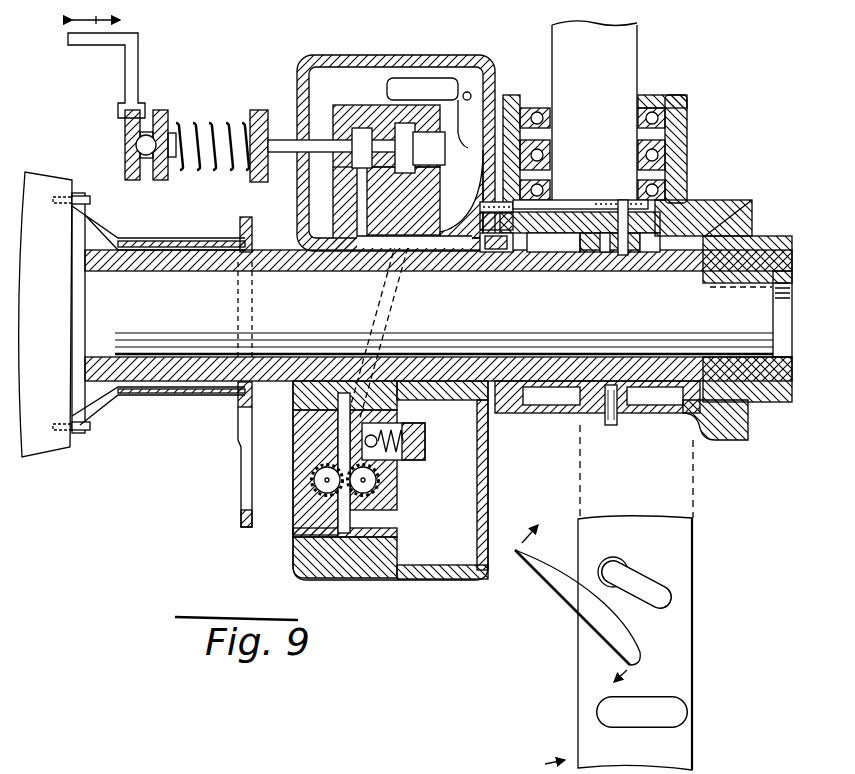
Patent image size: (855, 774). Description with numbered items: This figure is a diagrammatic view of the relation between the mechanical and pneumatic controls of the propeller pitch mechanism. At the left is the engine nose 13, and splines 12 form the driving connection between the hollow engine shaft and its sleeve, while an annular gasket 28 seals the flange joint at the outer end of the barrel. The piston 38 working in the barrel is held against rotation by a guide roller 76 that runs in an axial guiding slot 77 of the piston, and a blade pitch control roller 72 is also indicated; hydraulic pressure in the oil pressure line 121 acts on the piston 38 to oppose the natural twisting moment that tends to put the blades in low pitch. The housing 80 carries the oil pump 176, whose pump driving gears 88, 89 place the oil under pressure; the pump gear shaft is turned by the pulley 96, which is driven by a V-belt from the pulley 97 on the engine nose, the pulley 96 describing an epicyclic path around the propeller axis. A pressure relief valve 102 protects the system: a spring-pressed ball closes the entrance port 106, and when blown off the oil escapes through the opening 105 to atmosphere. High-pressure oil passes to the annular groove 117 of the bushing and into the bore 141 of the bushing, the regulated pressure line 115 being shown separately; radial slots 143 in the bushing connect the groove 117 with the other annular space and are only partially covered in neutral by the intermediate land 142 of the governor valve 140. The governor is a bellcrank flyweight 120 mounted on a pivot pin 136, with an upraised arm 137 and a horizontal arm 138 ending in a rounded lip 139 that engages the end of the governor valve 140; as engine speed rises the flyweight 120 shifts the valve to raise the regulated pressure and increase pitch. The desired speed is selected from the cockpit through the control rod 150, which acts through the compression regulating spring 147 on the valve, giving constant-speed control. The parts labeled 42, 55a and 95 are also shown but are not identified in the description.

The splines 12 is at (214, 278).
The engine nose 13 is at (74, 323).
The annular gasket 28 is at (755, 205).
The piston 38 is at (556, 276).
The bearing bracket 42 is at (688, 133).
The cylinder 55a is at (637, 60).
The blade pitch control roller 72 is at (617, 255).
The guide roller 76 is at (612, 390).
The axial guiding slot 77 is at (666, 600).
The housing 80 is at (396, 580).
The pump gear 88 is at (318, 490).
The pump gear 89 is at (363, 497).
The arm 95 is at (238, 414).
The pulley 96 is at (236, 495).
The pulley 97 is at (238, 232).
The pressure relief valve 102 is at (362, 438).
The opening 105 is at (425, 445).
The entrance port 106 is at (365, 448).
The regulated pressure line 115 is at (368, 298).
The annular groove 117 is at (355, 160).
The flyweight 120 is at (440, 148).
The oil pressure line 121 is at (362, 195).
The pivot pin 136 is at (470, 100).
The upraised arm 137 is at (418, 85).
The horizontal arm 138 is at (586, 130).
The rounded lip 139 is at (440, 148).
The governor valve 140 is at (402, 120).
The bore 141 is at (388, 135).
The intermediate land 142 is at (270, 172).
The radial slots 143 is at (355, 125).
The compression regulating spring 147 is at (205, 170).
The control rod 150 is at (140, 35).
The oil pump 176 is at (445, 570).